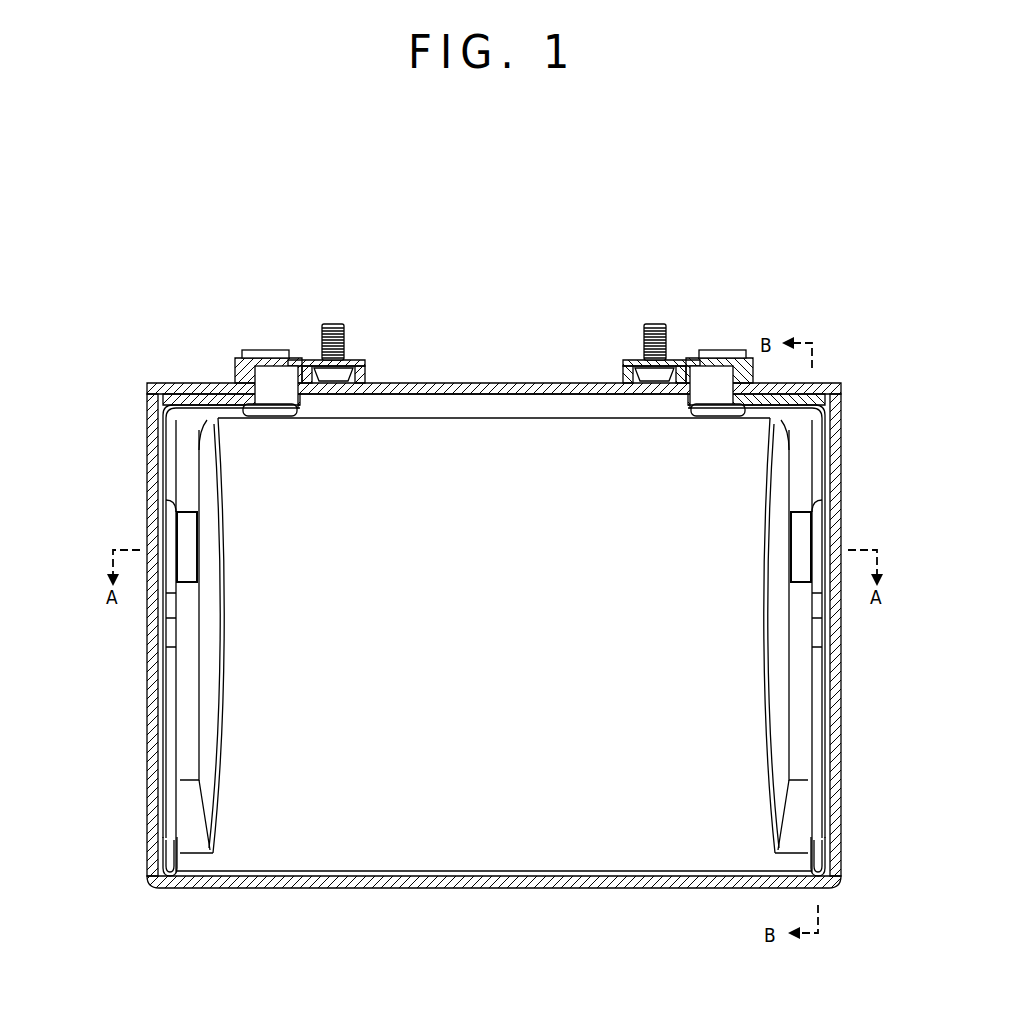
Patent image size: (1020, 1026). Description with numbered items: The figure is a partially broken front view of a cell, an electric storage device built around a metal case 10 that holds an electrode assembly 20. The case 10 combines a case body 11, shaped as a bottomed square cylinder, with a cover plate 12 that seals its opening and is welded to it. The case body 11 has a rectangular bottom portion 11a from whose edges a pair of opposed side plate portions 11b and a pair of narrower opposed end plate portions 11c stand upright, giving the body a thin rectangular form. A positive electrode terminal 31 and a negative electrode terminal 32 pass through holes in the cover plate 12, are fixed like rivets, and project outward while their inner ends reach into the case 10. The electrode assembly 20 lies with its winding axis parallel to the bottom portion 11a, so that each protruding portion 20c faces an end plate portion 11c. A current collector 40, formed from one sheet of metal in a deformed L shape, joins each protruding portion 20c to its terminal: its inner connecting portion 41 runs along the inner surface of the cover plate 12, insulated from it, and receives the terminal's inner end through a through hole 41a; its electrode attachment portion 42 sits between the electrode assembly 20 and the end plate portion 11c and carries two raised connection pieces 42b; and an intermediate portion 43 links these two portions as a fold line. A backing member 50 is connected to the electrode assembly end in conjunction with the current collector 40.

The case 10 is at (485, 668).
The case body 11 is at (497, 668).
The bottom portion 11a is at (427, 884).
The side plate portion 11b is at (512, 407).
The end plate portion 11c is at (148, 712).
The cover plate 12 is at (160, 386).
The electrode assembly 20 is at (500, 822).
The protruding portion 20c is at (198, 862).
The positive electrode terminal 31 is at (316, 334).
The negative electrode terminal 32 is at (672, 334).
The current collector 40 is at (160, 603).
The inner connecting portion 41 is at (197, 394).
The through hole 41a is at (267, 352).
The electrode attachment portion 42 is at (176, 538).
The connection piece 42b is at (178, 512).
The intermediate portion 43 is at (207, 420).
The backing member 50 is at (186, 525).